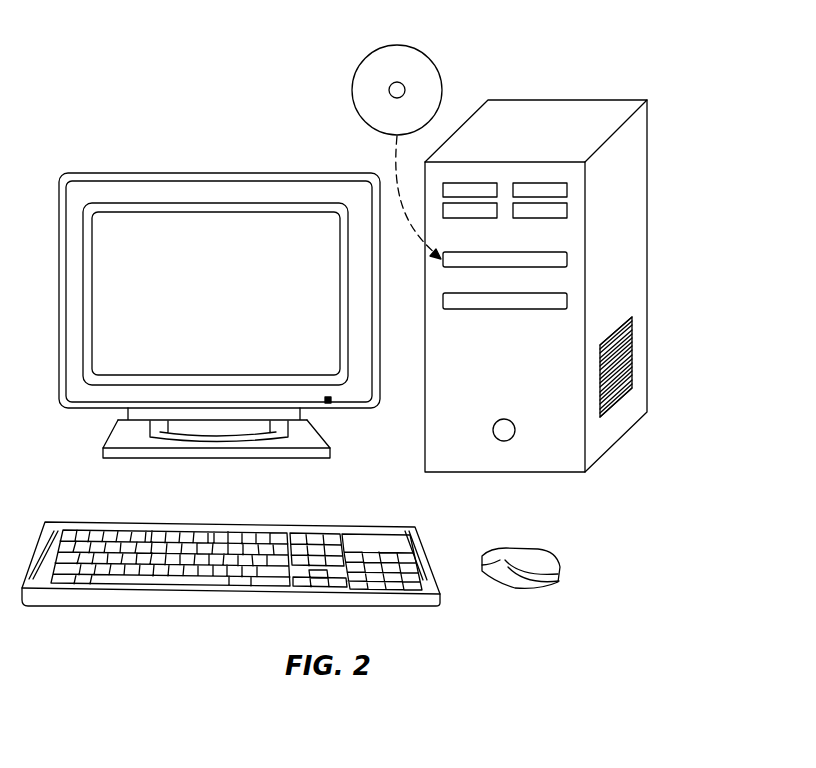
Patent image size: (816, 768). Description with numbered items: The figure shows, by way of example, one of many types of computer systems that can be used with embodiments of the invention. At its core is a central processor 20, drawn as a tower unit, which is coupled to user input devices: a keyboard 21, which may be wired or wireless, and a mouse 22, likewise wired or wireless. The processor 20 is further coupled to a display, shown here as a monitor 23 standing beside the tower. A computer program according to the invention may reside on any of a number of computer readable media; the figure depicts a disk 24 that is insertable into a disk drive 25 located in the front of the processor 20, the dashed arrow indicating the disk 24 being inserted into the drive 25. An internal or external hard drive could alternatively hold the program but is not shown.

The central processor 20 is at (563, 272).
The keyboard 21 is at (100, 522).
The mouse 22 is at (530, 547).
The monitor 23 is at (213, 173).
The disk 24 is at (397, 43).
The disk drive 25 is at (559, 252).